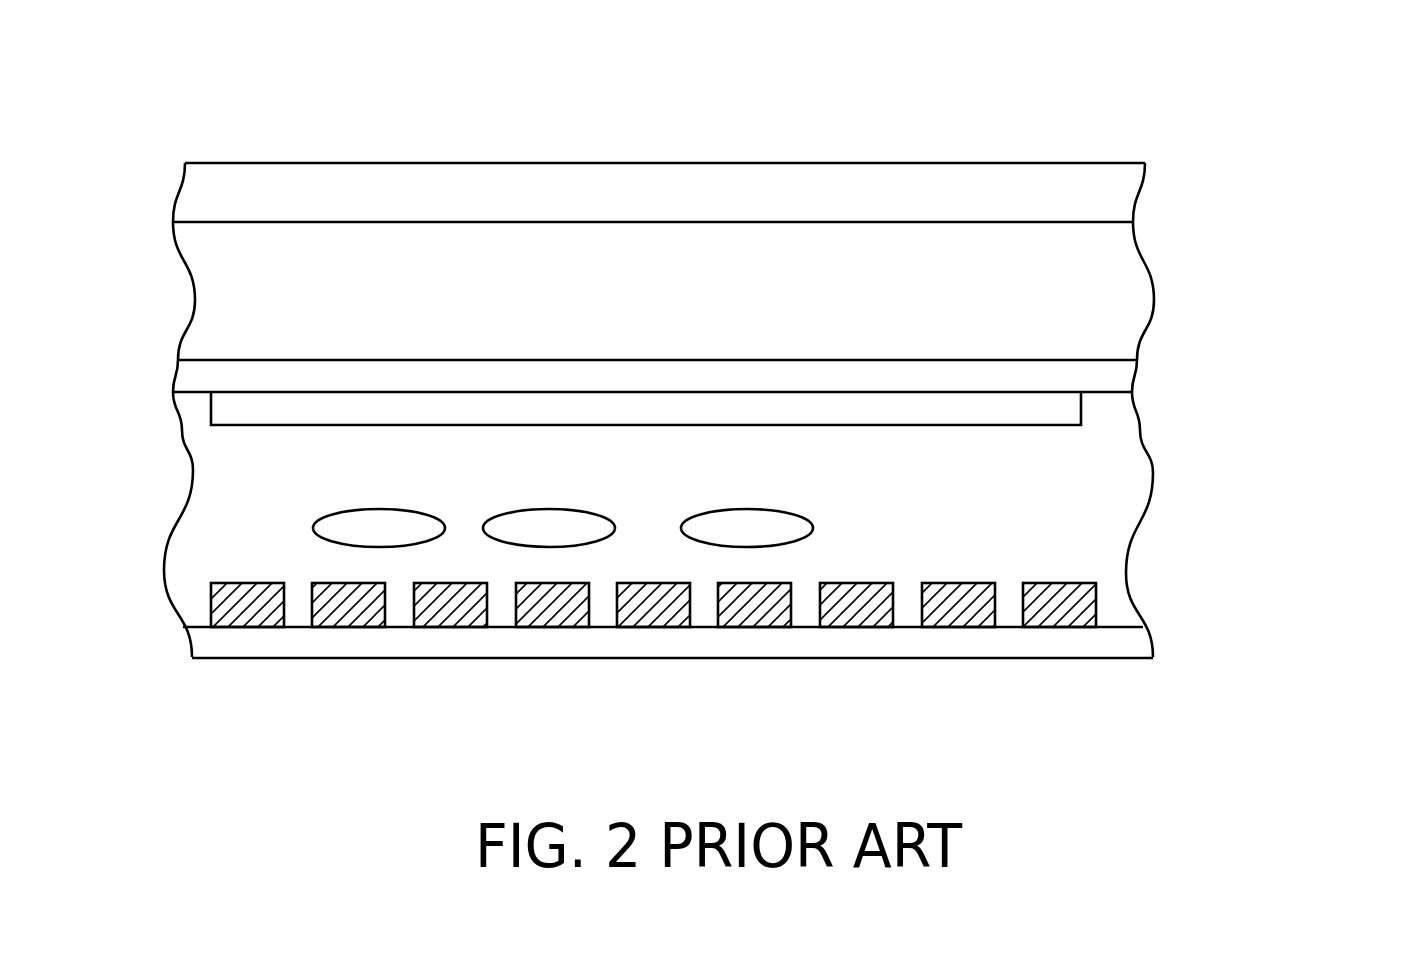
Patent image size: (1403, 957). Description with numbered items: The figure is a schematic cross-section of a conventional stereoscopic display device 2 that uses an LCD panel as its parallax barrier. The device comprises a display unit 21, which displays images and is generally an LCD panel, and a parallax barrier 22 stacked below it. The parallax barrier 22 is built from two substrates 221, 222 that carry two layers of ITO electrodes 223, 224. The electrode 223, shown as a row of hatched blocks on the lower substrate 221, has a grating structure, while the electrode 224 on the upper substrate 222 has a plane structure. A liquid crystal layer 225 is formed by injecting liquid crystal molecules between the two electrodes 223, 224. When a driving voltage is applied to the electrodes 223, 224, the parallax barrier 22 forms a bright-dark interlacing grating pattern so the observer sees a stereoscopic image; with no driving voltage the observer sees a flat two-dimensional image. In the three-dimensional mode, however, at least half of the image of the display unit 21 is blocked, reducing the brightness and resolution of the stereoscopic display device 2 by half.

The stereoscopic display device 2 is at (767, 383).
The display unit 21 is at (670, 201).
The parallax barrier 22 is at (772, 539).
The substrate 221 is at (1075, 645).
The substrate 222 is at (1122, 375).
The electrode 223 is at (1082, 607).
The electrode 224 is at (1070, 415).
The liquid crystal layer 225 is at (1122, 515).